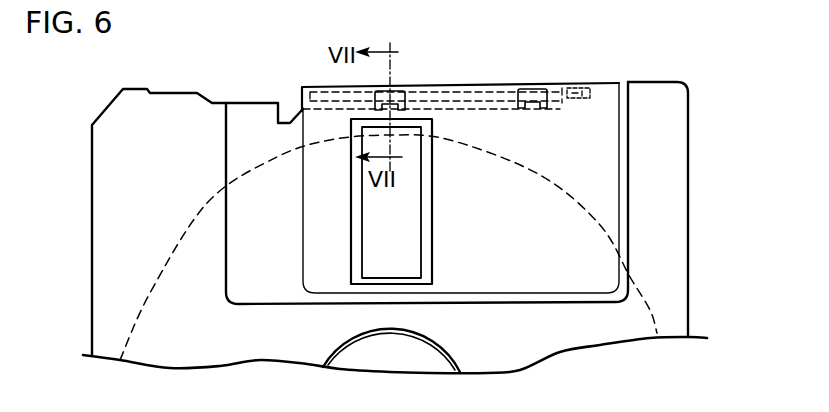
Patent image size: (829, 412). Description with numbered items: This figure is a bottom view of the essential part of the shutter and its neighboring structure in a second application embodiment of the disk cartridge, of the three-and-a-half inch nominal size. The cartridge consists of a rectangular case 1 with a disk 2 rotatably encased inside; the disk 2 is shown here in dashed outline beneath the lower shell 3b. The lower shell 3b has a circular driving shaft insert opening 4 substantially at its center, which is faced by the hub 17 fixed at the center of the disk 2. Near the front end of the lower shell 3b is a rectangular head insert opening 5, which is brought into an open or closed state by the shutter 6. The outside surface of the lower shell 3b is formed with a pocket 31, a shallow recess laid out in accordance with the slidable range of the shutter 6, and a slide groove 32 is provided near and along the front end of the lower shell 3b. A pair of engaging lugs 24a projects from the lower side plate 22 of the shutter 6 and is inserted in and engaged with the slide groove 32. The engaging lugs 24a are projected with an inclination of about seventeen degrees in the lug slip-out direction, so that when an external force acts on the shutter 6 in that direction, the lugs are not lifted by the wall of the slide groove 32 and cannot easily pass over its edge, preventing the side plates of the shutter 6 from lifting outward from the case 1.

The case 1 is at (692, 125).
The disk 2 is at (657, 335).
The lower shell 3b is at (690, 283).
The driving shaft insert opening 4 is at (438, 355).
The head insert opening 5 is at (417, 242).
The shutter 6 is at (593, 83).
The hub 17 is at (335, 348).
The lower side plate 22 is at (535, 280).
The engaging lugs 24a is at (397, 102).
The pocket 31 is at (230, 274).
The slide groove 32 is at (483, 86).